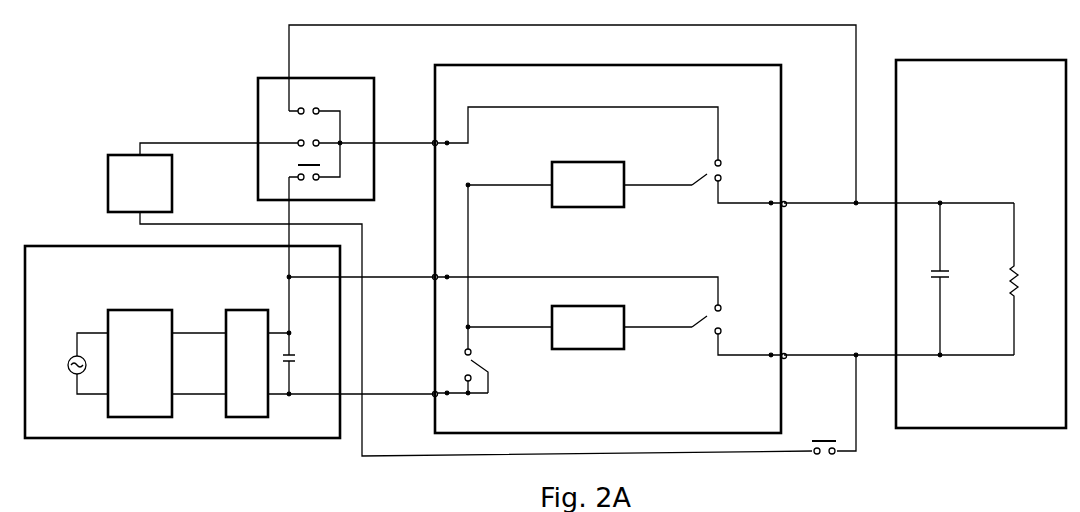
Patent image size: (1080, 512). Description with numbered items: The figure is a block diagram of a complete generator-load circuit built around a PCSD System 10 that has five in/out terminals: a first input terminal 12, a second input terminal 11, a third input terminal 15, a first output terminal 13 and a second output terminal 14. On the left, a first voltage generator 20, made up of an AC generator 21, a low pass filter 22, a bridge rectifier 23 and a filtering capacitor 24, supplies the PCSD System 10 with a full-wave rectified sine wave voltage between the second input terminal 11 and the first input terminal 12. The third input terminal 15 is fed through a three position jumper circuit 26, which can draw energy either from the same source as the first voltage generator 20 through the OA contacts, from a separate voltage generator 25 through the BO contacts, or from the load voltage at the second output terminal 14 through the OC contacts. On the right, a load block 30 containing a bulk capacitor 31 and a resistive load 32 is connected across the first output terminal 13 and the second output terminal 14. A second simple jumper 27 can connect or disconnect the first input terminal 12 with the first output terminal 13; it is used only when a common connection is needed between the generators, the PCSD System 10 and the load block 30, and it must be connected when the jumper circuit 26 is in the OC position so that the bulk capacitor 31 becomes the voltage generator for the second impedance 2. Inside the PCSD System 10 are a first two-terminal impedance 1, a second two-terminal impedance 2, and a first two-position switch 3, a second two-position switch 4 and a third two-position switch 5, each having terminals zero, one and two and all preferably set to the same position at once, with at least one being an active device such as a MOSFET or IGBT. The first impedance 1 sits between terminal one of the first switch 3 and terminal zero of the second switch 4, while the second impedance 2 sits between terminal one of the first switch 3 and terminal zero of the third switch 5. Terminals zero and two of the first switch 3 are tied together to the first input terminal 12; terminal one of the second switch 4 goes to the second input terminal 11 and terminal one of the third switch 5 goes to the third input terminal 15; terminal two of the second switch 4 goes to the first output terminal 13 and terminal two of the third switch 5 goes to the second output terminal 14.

The first two-terminal impedance Z1 1 is at (538, 309).
The second two-terminal impedance Z2 2 is at (538, 164).
The first two-position switch SW1 3 is at (503, 391).
The second two-position switch SW2 4 is at (738, 290).
The third two-position switch SW3 5 is at (738, 133).
The PCSD System 10 is at (431, 59).
The second input terminal Vin1 11 is at (427, 289).
The first input terminal Vin0 12 is at (427, 408).
The first output terminal Vout0 13 is at (791, 370).
The second output terminal Vout1 14 is at (791, 218).
The third input terminal Vin2 15 is at (427, 156).
The first voltage generator VG1 20 is at (52, 239).
The AC generator Gac 21 is at (62, 346).
The low pass filter LPF 22 is at (115, 303).
The bridge rectifier BR 23 is at (232, 302).
The filtering capacitor Cf 24 is at (297, 350).
The separate voltage generator VG2 25 is at (105, 148).
The three position jumper circuit J1 26 is at (256, 71).
The jumper J2 27 is at (852, 460).
The Zload block 30 is at (903, 52).
The bulk capacitor CL 31 is at (950, 257).
The resistive load RL 32 is at (1023, 257).